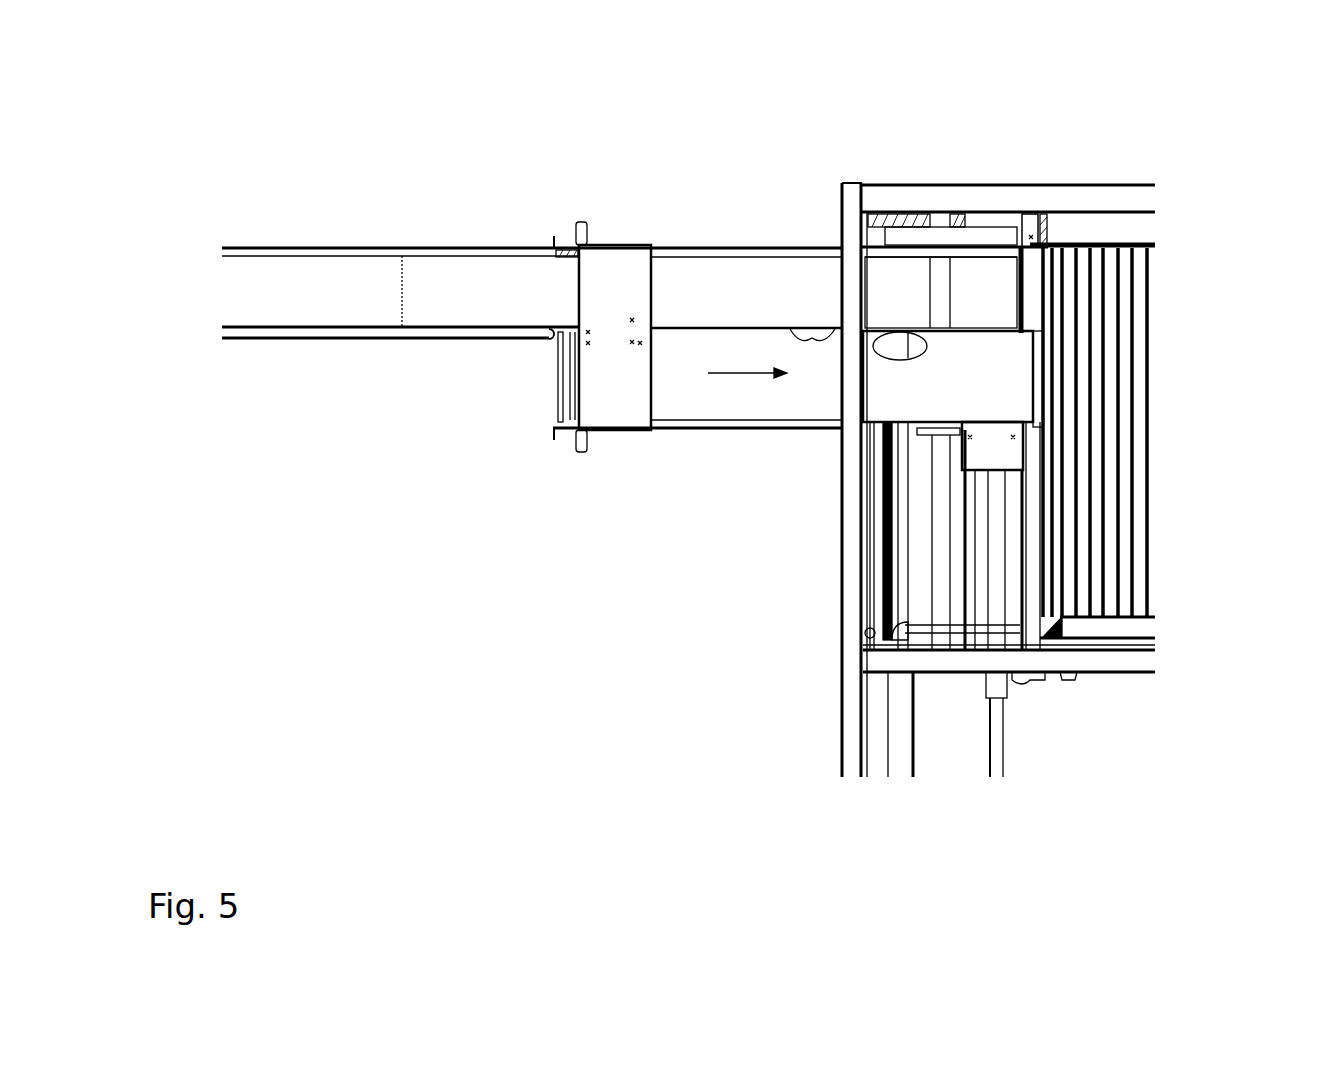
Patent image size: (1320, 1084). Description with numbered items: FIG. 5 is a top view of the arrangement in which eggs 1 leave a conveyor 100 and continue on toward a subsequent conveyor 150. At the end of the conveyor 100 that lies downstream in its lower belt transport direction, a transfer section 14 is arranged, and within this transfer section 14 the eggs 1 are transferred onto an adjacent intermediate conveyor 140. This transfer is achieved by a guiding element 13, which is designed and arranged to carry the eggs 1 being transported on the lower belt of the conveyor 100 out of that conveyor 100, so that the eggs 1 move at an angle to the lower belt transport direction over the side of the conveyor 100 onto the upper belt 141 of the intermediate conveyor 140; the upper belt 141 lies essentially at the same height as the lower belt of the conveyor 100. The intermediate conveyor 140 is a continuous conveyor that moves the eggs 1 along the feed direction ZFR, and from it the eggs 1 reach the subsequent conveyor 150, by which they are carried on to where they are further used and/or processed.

The eggs 1 is at (897, 347).
The guiding element 13 is at (955, 340).
The transfer section 14 is at (1032, 172).
The conveyor 100 is at (364, 222).
The intermediate conveyor 140 is at (643, 455).
The upper belt 141 is at (703, 395).
The subsequent conveyor 150 is at (1066, 706).
The feed direction ZFR is at (758, 377).